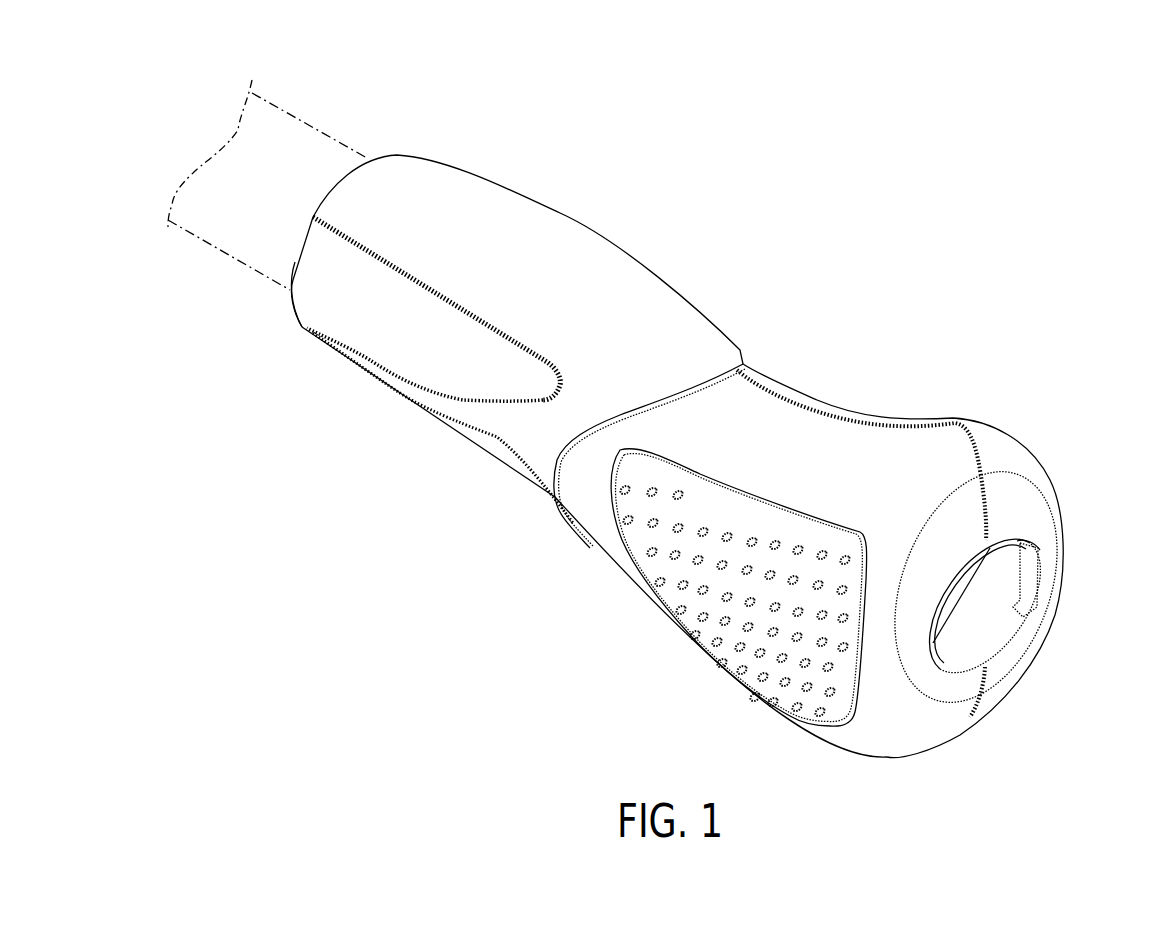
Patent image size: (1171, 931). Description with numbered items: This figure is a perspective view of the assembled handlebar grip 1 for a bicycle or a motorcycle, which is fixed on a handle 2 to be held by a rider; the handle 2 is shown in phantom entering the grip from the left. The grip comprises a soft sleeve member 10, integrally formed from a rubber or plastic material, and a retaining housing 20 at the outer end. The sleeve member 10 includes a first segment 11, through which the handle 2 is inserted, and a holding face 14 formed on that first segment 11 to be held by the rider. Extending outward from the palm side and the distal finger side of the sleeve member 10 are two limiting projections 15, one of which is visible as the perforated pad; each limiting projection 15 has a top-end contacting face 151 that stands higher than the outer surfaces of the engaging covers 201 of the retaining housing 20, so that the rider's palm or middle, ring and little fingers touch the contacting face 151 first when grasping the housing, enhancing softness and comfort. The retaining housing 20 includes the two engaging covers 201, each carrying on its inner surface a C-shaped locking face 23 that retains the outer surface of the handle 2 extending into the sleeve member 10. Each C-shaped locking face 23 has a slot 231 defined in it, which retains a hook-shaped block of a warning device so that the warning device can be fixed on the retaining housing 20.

The handlebar grip 1 is at (801, 302).
The handle 2 is at (322, 130).
The sleeve member 10 is at (650, 268).
The first segment 11 is at (292, 258).
The holding face 14 is at (408, 353).
The limiting projection 15 is at (623, 546).
The contacting face 151 is at (717, 580).
The retaining housing 20 is at (903, 272).
The engaging cover 201 is at (823, 407).
The C-shaped locking face 23 is at (990, 640).
The slot 231 is at (1037, 573).